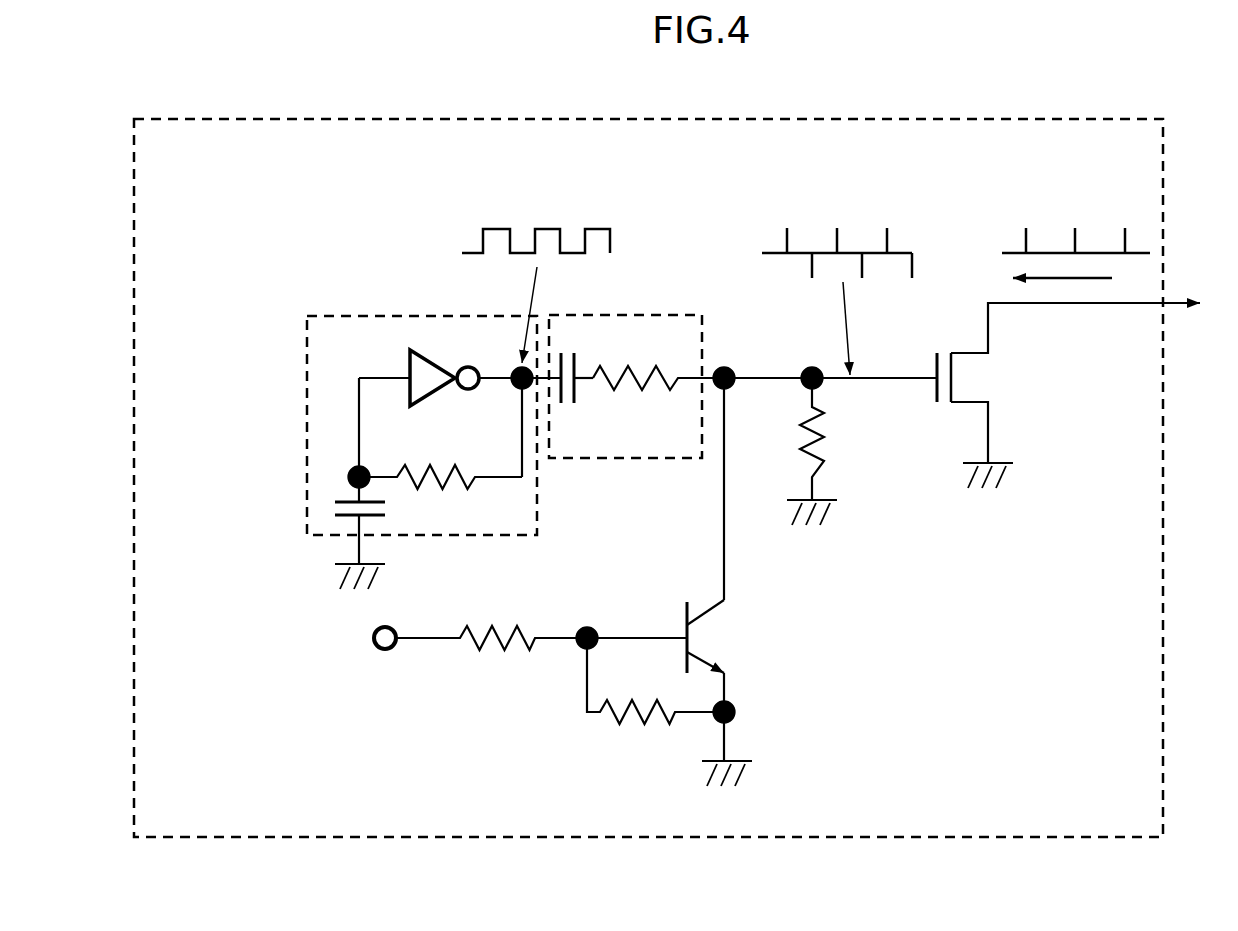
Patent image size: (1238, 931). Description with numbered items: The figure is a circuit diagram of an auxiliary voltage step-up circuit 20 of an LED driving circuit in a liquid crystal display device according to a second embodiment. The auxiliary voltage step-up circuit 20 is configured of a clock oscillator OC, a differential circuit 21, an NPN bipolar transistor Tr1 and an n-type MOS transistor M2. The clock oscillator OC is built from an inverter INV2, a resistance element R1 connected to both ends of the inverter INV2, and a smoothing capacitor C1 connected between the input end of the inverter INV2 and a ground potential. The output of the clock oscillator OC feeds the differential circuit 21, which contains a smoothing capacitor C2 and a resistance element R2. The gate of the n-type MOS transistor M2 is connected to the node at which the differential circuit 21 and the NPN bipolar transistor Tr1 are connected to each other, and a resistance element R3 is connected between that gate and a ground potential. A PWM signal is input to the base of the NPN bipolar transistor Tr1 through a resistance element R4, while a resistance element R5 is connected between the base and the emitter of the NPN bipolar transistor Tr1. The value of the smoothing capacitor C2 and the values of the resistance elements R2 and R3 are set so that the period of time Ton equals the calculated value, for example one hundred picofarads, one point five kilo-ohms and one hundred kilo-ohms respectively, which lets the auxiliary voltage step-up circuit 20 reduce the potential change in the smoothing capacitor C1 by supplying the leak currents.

The auxiliary voltage step-up circuit 20 is at (940, 117).
The differential circuit 21 is at (680, 312).
The clock oscillator OC is at (307, 315).
The inverter INV2 is at (410, 350).
The resistance element R1 is at (428, 463).
The smoothing capacitor C1 is at (328, 508).
The smoothing capacitor C2 is at (567, 407).
The resistance element R2 is at (642, 392).
The resistance element R3 is at (827, 437).
The n-type MOS transistor M2 is at (952, 377).
The resistance element R4 is at (492, 628).
The resistance element R5 is at (643, 725).
The NPN bipolar transistor Tr1 is at (692, 637).